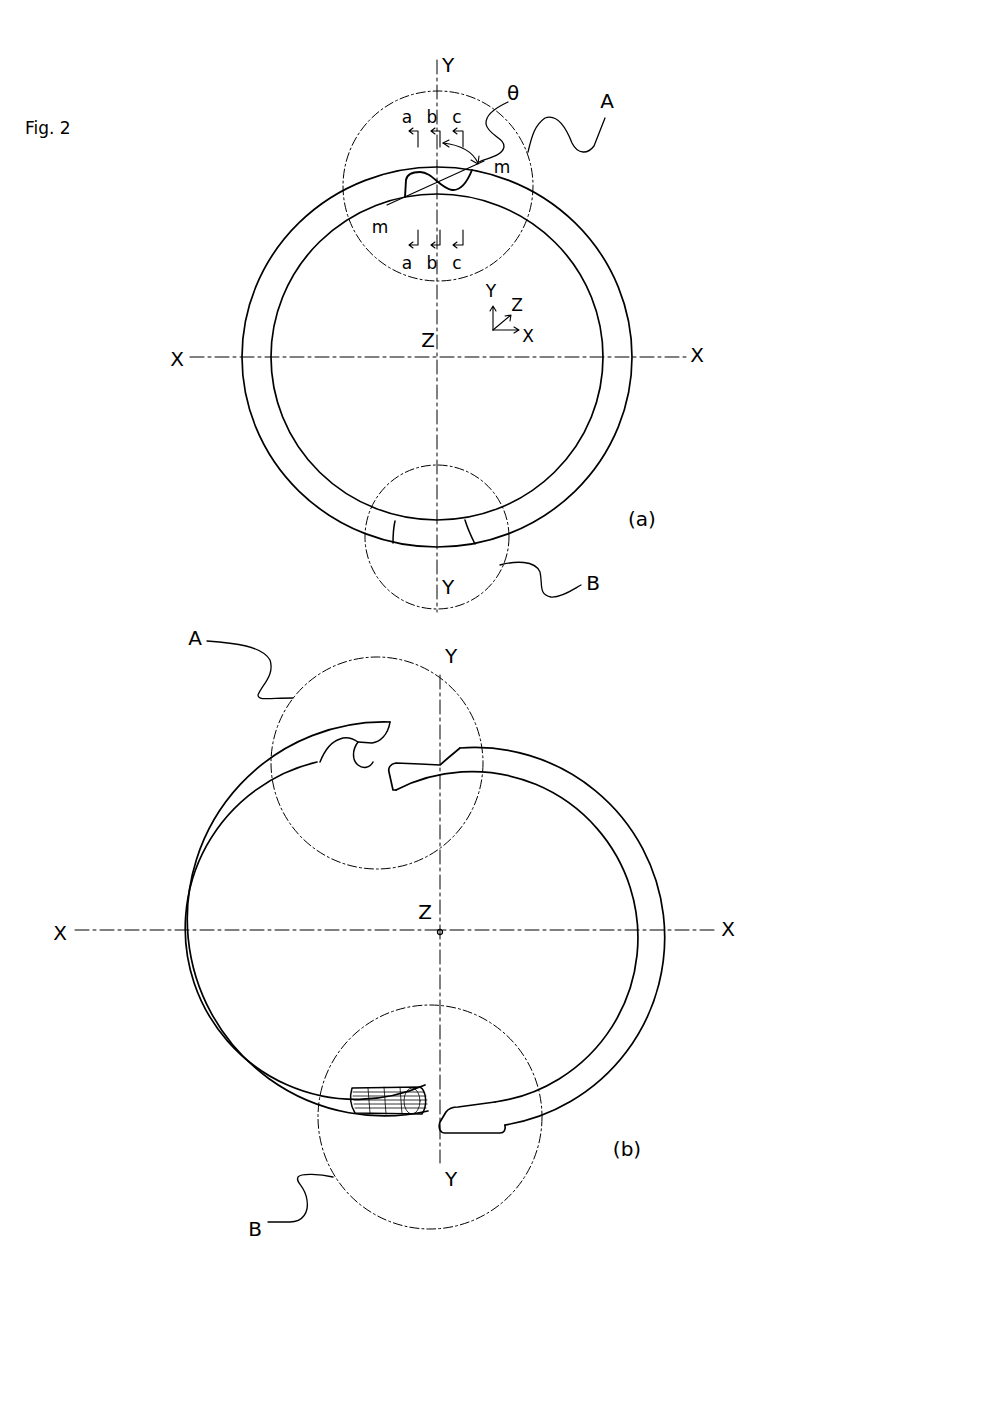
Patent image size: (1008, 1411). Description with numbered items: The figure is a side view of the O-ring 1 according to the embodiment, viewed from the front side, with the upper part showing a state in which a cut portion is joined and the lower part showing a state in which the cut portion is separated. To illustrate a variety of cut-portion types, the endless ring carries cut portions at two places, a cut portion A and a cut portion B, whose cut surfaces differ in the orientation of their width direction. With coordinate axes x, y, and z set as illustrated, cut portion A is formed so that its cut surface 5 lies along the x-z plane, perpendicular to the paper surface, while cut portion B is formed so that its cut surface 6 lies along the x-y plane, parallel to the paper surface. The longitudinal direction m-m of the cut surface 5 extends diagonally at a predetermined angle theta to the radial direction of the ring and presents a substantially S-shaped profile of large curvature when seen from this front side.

The ring (piston ring / snap ring) 1 is at (292, 252).
The cut surface 5 is at (405, 185).
The cut surface 6 is at (395, 523).